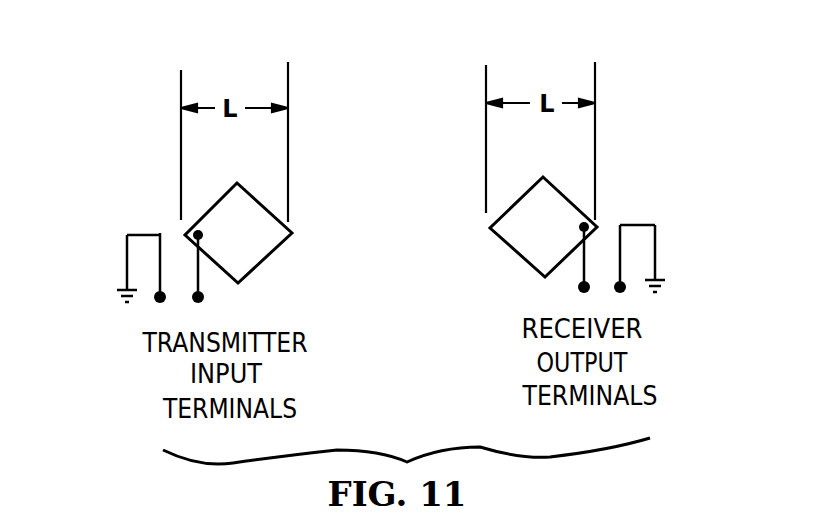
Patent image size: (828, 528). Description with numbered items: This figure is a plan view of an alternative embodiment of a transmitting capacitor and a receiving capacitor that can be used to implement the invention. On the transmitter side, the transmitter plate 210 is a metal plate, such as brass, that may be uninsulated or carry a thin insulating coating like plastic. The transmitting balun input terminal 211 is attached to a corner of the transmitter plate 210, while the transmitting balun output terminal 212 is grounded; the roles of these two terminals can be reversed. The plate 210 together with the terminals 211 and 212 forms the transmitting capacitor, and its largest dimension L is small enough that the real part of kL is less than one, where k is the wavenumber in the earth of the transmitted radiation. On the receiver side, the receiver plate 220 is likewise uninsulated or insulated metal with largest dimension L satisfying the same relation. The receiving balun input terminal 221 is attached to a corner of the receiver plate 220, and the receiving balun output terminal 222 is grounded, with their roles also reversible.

The transmitter plate 210 is at (187, 182).
The transmitting balun input terminal 211 is at (143, 223).
The transmitting balun output terminal 212 is at (116, 243).
The receiver plate 220 is at (517, 262).
The receiving balun input terminal 221 is at (635, 202).
The receiving balun output terminal 222 is at (673, 234).